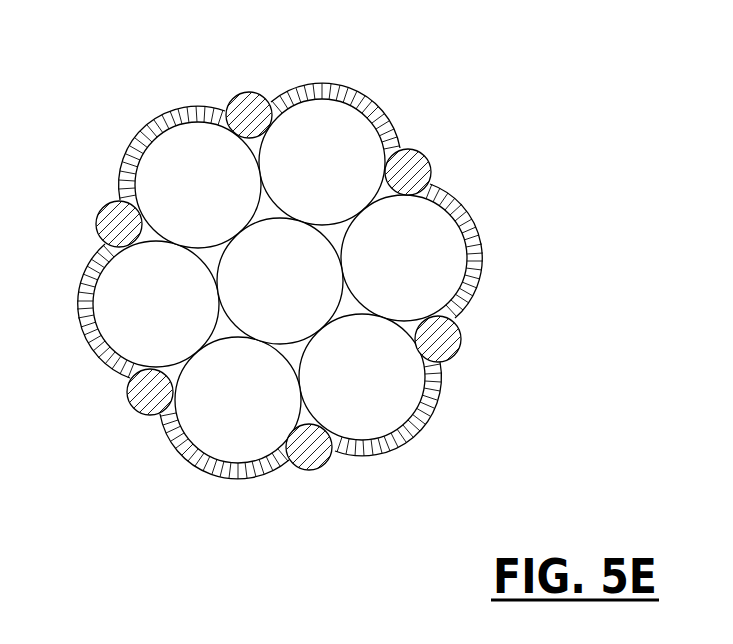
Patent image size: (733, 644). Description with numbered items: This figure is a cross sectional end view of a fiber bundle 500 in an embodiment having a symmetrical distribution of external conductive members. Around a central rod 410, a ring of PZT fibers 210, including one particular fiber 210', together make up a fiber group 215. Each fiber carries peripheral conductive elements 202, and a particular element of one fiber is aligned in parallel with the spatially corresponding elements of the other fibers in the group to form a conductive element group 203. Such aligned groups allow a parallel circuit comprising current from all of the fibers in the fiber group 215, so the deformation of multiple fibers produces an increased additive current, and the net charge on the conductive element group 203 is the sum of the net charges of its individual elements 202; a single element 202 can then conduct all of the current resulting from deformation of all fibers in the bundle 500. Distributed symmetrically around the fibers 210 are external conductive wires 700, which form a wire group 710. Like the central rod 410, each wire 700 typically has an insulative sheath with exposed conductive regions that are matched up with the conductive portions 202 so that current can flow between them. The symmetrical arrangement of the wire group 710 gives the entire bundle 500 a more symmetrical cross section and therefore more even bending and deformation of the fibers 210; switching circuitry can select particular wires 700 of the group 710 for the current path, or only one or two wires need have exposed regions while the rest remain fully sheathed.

The fiber bundle 500 is at (349, 82).
The PZT fiber 210 is at (280, 281).
The PZT fiber 210' is at (198, 185).
The central rod 410 is at (280, 281).
The fiber group 215 is at (113, 282).
The peripheral conductive element 202 is at (85, 338).
The conductive element group 203 is at (387, 113).
The external conductive wire 700 is at (142, 415).
The wire group 710 is at (150, 417).